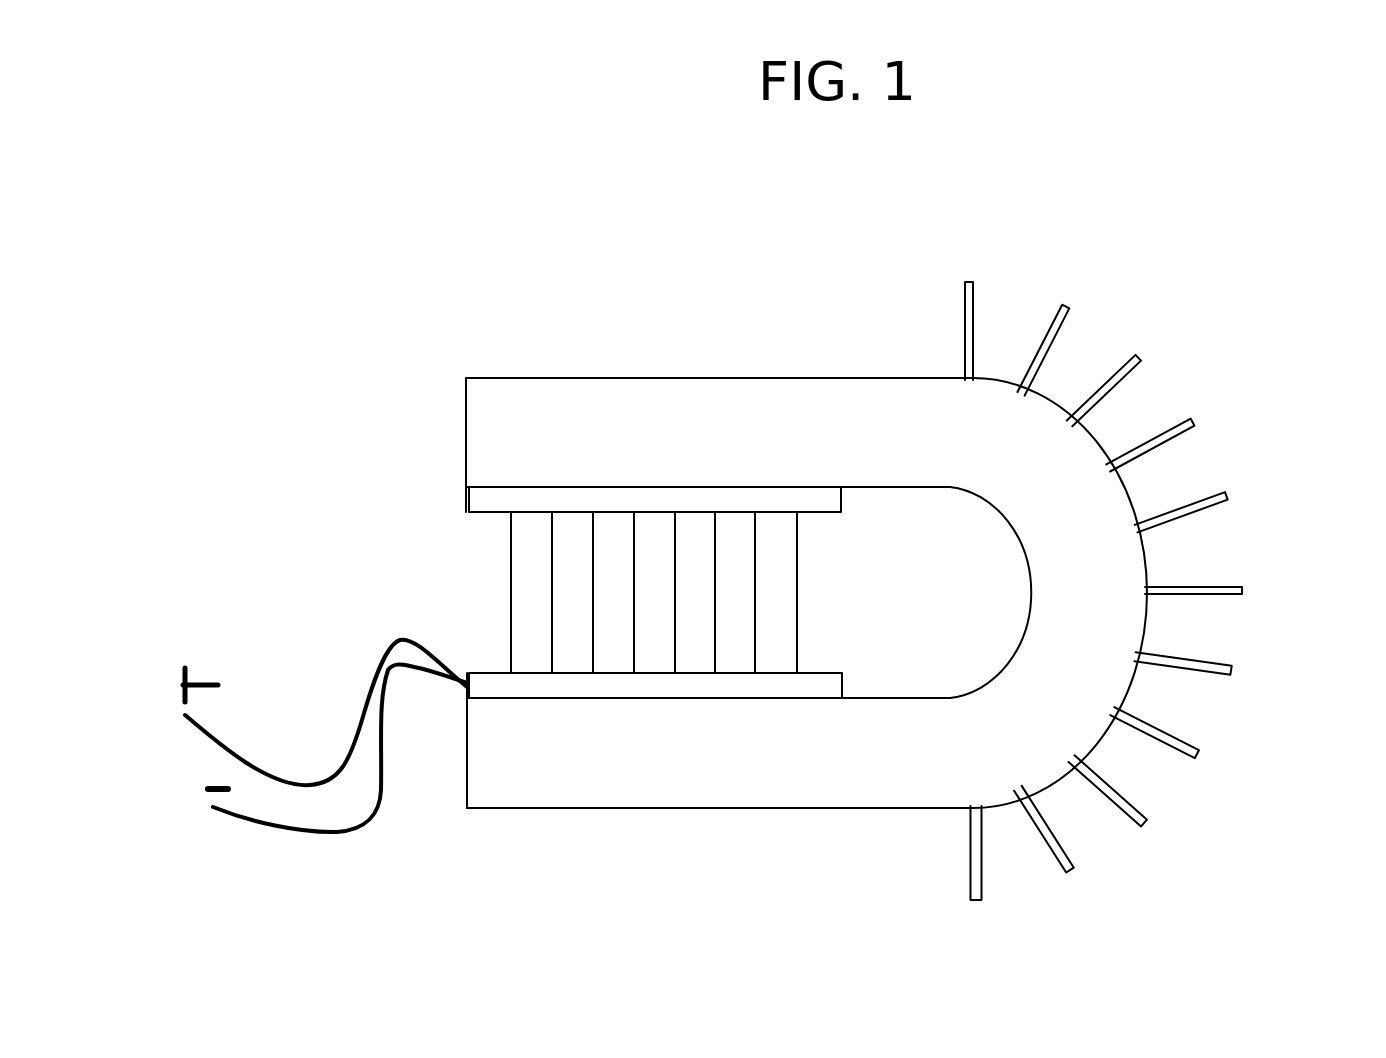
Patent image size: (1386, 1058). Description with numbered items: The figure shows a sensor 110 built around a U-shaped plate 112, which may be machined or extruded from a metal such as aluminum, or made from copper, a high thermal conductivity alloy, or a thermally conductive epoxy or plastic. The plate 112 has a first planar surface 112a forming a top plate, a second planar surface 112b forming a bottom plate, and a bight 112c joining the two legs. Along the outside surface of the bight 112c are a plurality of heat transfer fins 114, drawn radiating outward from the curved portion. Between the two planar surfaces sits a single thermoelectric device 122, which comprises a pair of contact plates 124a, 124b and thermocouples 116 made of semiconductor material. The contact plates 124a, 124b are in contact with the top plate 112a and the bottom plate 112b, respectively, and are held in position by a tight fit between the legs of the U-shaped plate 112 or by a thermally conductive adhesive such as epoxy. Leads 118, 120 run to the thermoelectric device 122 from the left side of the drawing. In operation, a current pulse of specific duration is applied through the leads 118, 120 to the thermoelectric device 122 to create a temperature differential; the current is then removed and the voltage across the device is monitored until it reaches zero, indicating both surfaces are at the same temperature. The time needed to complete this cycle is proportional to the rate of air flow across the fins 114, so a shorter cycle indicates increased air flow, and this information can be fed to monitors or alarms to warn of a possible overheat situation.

The sensor 110 is at (541, 342).
The U-shaped plate 112 is at (858, 595).
The first planar surface 112a is at (747, 377).
The second planar surface 112b is at (795, 809).
The bight 112c is at (1145, 617).
The heat transfer fins 114 is at (1232, 495).
The thermocouples 116 is at (607, 623).
The lead 118 is at (352, 766).
The lead 120 is at (333, 833).
The thermoelectric device 122 is at (798, 605).
The contact plate 124a is at (497, 445).
The contact plate 124b is at (487, 676).